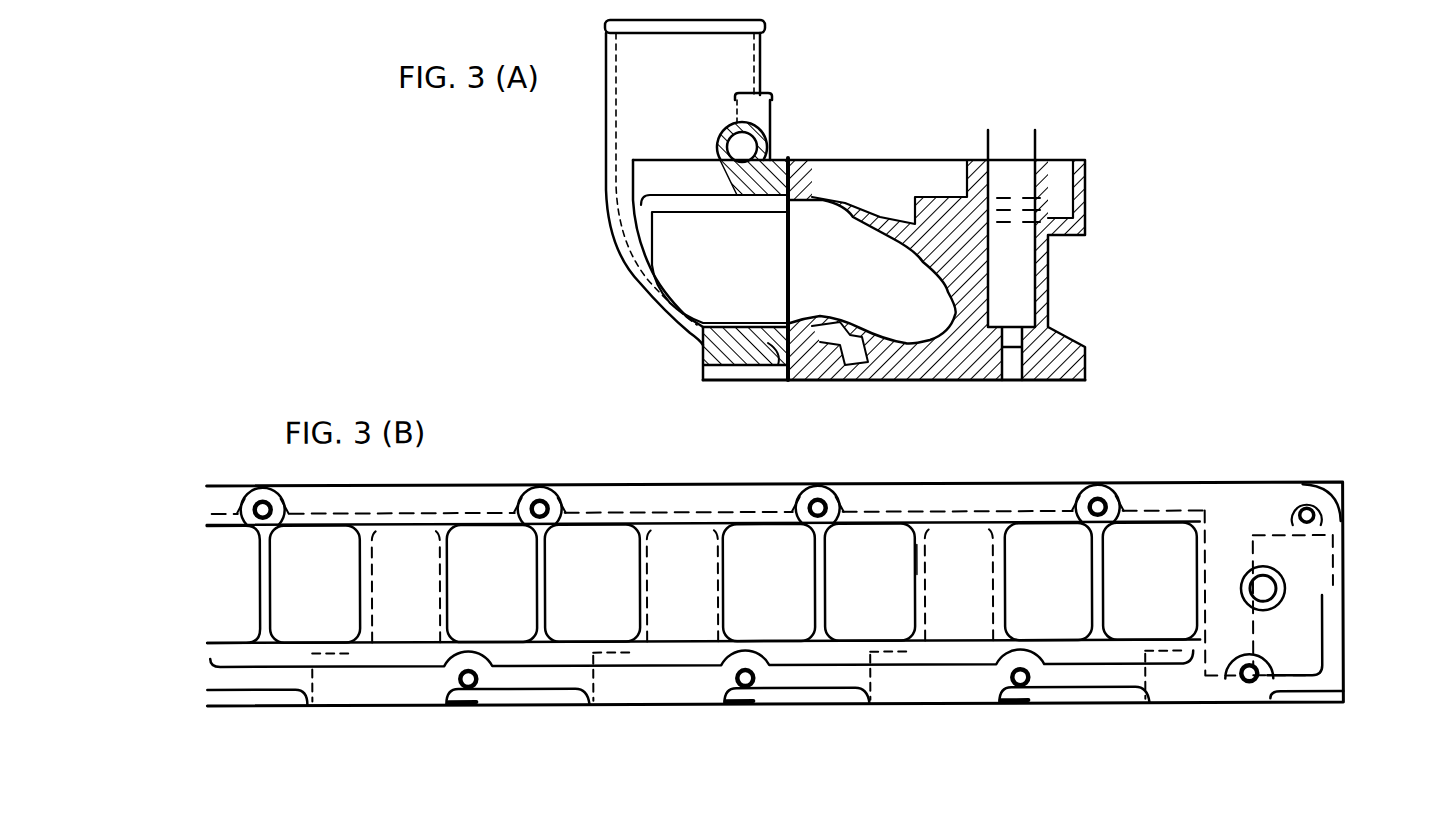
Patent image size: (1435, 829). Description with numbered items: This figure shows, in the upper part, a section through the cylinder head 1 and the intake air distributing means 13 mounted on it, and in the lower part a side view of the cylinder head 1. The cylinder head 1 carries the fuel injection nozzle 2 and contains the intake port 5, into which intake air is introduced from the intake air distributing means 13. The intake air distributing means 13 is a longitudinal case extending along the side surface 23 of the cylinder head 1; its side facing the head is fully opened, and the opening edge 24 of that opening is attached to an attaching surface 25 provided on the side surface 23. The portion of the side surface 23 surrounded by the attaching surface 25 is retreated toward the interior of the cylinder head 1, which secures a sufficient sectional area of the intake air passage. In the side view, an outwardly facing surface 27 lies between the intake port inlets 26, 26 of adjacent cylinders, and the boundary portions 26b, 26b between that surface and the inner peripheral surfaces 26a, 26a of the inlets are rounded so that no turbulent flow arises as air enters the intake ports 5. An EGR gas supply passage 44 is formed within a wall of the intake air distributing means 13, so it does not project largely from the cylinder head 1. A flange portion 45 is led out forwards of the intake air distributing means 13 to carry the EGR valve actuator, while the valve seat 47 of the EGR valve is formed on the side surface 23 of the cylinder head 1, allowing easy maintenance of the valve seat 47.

In FIG. 3A, the cylinder head 1 is at (1068, 153).
In FIG. 3B, the cylinder head 1 is at (1260, 473).
In FIG. 3A, the fuel injection nozzle 2 is at (1015, 282).
In FIG. 3A, the intake port 5 is at (857, 277).
In FIG. 3A, the intake air distributing means 13 is at (662, 303).
In FIG. 3A, the side surface 23 is at (778, 343).
In FIG. 3B, the side surface 23 is at (1143, 482).
In FIG. 3A, the opening edge 24 is at (792, 348).
In FIG. 3A, the attaching surface 25 is at (772, 365).
In FIG. 3B, the attaching surface 25 is at (940, 503).
In FIG. 3B, the intake port inlet 26 is at (848, 618).
In FIG. 3B, the inner peripheral surface 26a is at (915, 607).
In FIG. 3B, the boundary portion 26b is at (917, 558).
In FIG. 3B, the outwardly facing surface 27 is at (955, 615).
In FIG. 3A, the EGR gas supply passage 44 is at (742, 148).
In FIG. 3B, the flange portion 45 is at (1293, 490).
In FIG. 3B, the valve seat 47 is at (1283, 607).